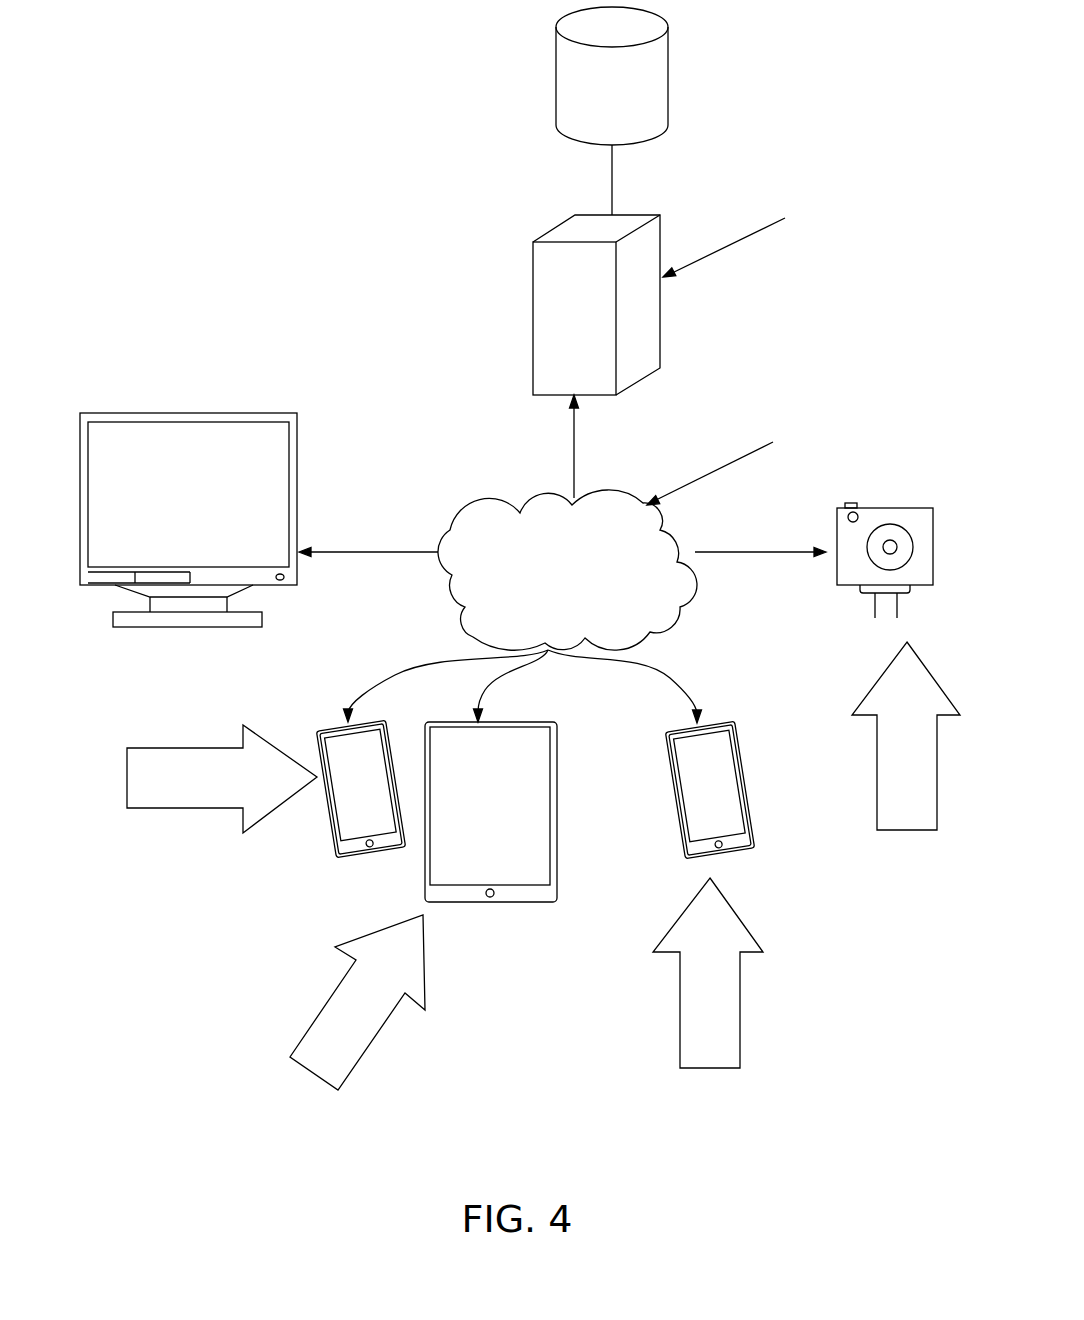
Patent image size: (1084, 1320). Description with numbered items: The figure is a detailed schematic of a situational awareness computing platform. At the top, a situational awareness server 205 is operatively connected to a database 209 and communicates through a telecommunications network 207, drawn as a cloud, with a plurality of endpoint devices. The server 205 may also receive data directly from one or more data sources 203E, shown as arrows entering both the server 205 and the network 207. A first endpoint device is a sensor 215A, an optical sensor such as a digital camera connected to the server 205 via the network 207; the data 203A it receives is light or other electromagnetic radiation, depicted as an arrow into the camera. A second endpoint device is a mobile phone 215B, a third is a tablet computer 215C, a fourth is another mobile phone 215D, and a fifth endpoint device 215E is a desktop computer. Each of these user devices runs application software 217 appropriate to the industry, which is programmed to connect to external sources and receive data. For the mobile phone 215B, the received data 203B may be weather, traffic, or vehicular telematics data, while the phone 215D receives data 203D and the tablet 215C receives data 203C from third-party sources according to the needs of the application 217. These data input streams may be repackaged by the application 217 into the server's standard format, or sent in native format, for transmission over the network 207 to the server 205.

The database 209 is at (556, 75).
The situational awareness server 205 is at (533, 305).
The data sources 203E is at (738, 240).
The telecommunications network 207 is at (448, 602).
The desktop computer endpoint device 215E is at (173, 412).
The application software 217 is at (312, 503).
The sensor endpoint device 215A is at (882, 507).
The data received by the sensor 203A is at (898, 832).
The data received by the fourth endpoint device 203D is at (127, 782).
The mobile phone endpoint device 215D is at (348, 858).
The tablet computer endpoint device 215C is at (494, 903).
The mobile phone endpoint device 215B is at (749, 851).
The data input to the tablet computer 203C is at (311, 1073).
The data received by the second endpoint device 203B is at (703, 1070).